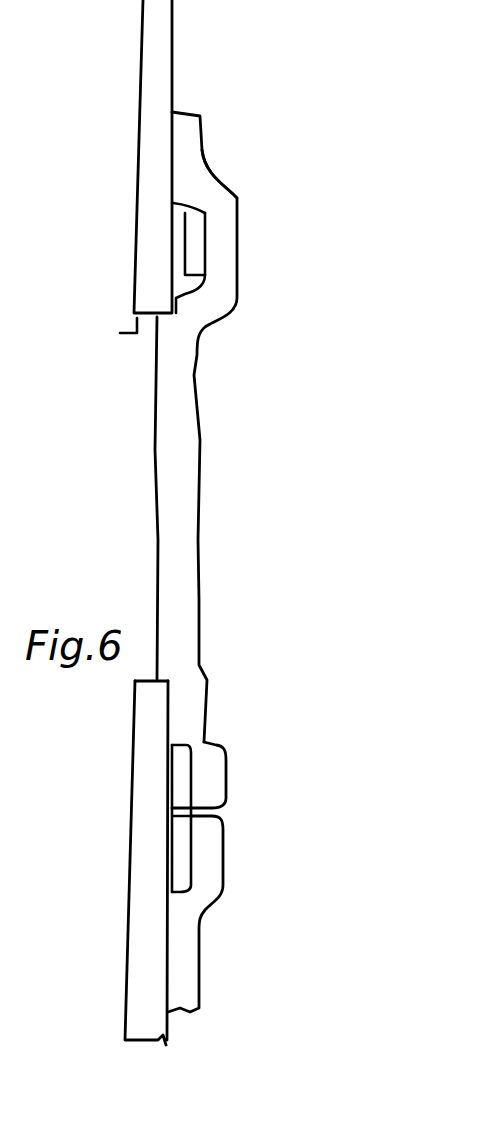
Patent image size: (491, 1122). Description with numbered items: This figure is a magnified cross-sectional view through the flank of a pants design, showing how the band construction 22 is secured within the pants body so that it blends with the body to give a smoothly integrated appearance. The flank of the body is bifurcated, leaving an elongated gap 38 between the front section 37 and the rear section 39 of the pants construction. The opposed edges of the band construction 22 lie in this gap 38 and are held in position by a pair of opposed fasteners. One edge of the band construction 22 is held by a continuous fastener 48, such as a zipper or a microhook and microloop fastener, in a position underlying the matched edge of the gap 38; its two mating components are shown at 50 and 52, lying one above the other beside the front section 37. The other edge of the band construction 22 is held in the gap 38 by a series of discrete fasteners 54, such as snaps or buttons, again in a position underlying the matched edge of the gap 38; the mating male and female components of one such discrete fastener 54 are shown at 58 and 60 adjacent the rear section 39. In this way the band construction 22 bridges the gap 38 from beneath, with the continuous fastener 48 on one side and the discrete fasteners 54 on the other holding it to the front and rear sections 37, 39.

The band construction 22 is at (202, 435).
The front section 37 is at (132, 860).
The gap 38 is at (82, 708).
The rear section 39 is at (140, 84).
The continuous fastener 48 is at (206, 799).
The mating component of continuous fastener 50 is at (185, 780).
The mating component of continuous fastener 52 is at (178, 850).
The discrete fastener 54 is at (216, 205).
The male component of discrete fastener 58 is at (178, 242).
The female component of discrete fastener 60 is at (204, 240).